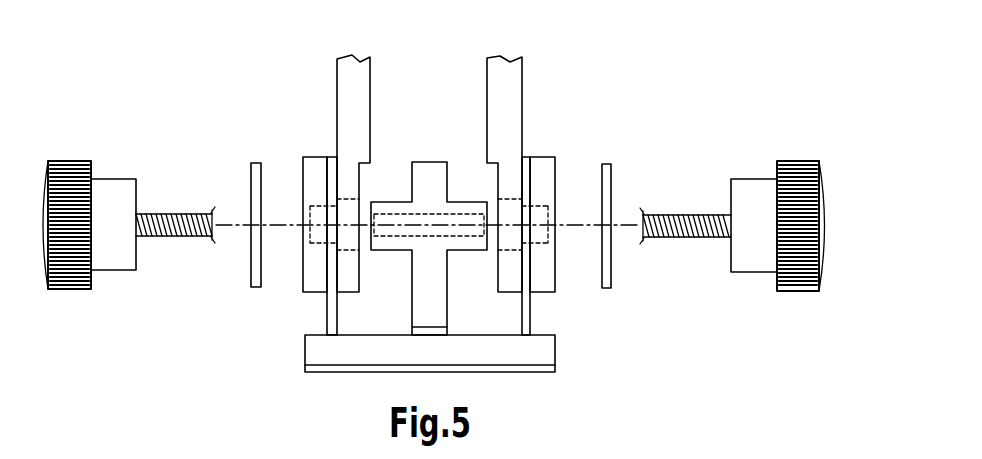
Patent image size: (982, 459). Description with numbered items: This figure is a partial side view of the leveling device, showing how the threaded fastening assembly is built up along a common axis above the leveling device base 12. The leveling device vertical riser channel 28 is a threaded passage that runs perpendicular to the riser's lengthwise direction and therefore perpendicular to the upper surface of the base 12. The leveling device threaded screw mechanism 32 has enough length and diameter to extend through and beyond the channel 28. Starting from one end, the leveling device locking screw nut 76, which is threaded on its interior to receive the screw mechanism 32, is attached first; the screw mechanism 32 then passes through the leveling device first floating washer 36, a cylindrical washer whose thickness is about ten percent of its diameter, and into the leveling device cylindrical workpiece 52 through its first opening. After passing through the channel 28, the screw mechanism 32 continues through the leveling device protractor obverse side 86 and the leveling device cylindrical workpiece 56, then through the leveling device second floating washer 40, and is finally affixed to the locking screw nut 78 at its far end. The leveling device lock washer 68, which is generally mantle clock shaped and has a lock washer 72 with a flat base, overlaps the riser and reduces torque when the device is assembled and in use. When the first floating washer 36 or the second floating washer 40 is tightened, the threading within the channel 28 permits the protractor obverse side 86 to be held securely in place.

The leveling device base 12 is at (320, 348).
The leveling device vertical riser channel 28 is at (430, 218).
The leveling device threaded screw mechanism 32 is at (171, 236).
The leveling device first floating washer 36 is at (251, 188).
The leveling device second floating washer 40 is at (613, 177).
The leveling device cylindrical workpiece 52 is at (313, 157).
The leveling device cylindrical workpiece 56 is at (548, 157).
The leveling device lock washer 68 is at (327, 308).
The lock washer 72 is at (528, 316).
The leveling device locking screw nut 76 is at (64, 183).
The locking screw nut 78 is at (802, 193).
The leveling device protractor obverse side 86 is at (505, 90).